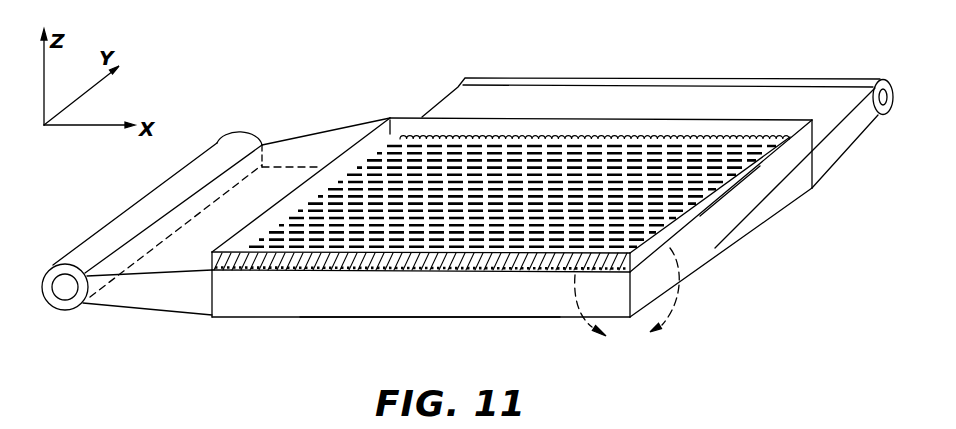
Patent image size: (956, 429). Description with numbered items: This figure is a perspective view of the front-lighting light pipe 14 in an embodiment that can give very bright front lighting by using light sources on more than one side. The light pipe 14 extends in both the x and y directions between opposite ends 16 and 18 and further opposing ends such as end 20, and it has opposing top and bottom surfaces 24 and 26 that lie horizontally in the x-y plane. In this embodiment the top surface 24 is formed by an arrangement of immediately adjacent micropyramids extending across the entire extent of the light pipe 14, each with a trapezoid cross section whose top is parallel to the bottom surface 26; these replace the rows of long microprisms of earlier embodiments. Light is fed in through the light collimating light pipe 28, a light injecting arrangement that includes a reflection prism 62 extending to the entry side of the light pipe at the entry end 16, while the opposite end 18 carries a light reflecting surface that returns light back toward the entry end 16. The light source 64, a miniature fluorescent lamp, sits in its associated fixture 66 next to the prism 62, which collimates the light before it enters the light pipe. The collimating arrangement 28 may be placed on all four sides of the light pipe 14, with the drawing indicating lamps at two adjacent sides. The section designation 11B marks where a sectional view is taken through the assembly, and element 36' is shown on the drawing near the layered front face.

The front-lighting light pipe 14 is at (512, 218).
The entry end 16 is at (421, 303).
The reflecting end 18 is at (736, 249).
The opposing end 20 is at (641, 163).
The top surface 24 is at (421, 306).
The bottom surface 26 is at (430, 302).
The light collimating light pipe 28 is at (461, 111).
The electrode row 36' is at (421, 315).
The reflection prism 62 is at (195, 248).
The light source 64 is at (54, 308).
The fixture 66 is at (157, 178).
The section line 11B is at (638, 307).